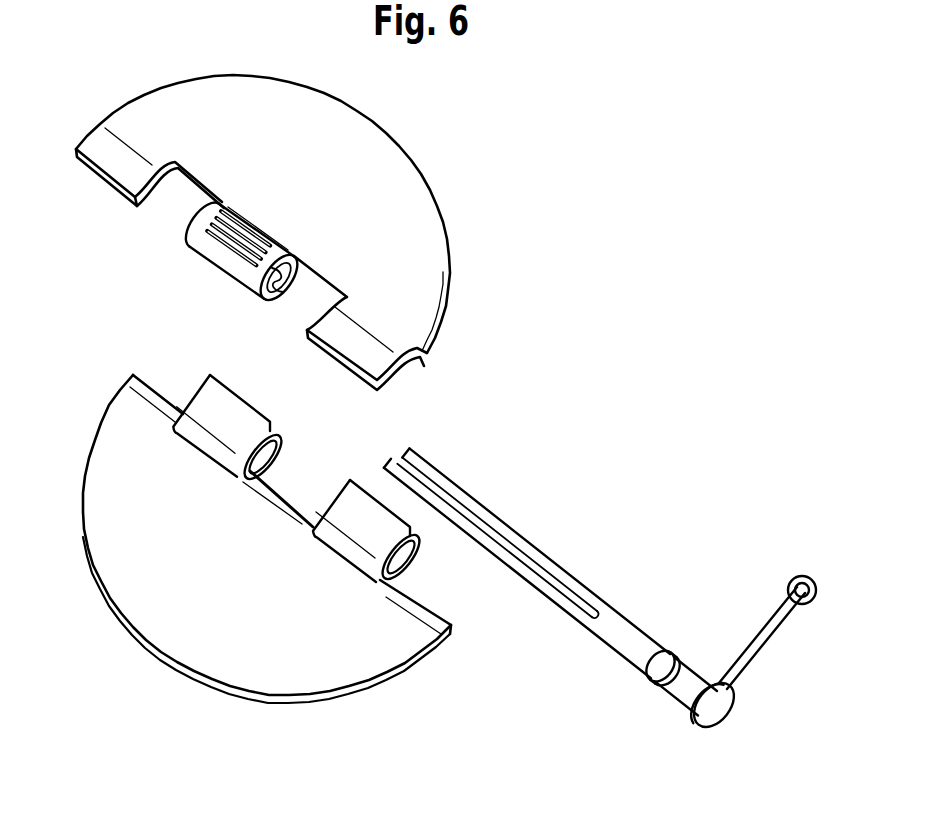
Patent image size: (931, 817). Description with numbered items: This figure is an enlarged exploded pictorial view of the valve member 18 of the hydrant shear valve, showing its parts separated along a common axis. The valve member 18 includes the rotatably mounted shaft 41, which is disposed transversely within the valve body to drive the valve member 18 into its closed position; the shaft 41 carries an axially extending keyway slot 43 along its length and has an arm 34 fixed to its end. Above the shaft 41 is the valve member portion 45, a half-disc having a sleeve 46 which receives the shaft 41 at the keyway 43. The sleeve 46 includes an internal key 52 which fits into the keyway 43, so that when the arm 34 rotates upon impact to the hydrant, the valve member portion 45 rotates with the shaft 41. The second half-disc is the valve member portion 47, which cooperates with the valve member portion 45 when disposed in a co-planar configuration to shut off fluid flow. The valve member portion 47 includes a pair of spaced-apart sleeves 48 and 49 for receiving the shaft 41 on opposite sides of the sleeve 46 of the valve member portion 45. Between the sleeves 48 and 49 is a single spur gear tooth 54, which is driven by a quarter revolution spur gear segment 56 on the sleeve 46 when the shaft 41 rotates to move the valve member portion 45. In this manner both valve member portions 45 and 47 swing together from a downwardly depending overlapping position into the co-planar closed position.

The valve member 18 is at (396, 708).
The arm 34 is at (775, 640).
The shaft 41 is at (645, 622).
The keyway slot 43 is at (553, 573).
The valve member portion 45 is at (437, 193).
The sleeve 46 is at (270, 300).
The valve member portion 47 is at (217, 680).
The sleeve 48 is at (288, 447).
The sleeve 49 is at (424, 556).
The internal key 52 is at (287, 290).
The spur gear tooth 54 is at (288, 505).
The spur gear segment 56 is at (205, 262).